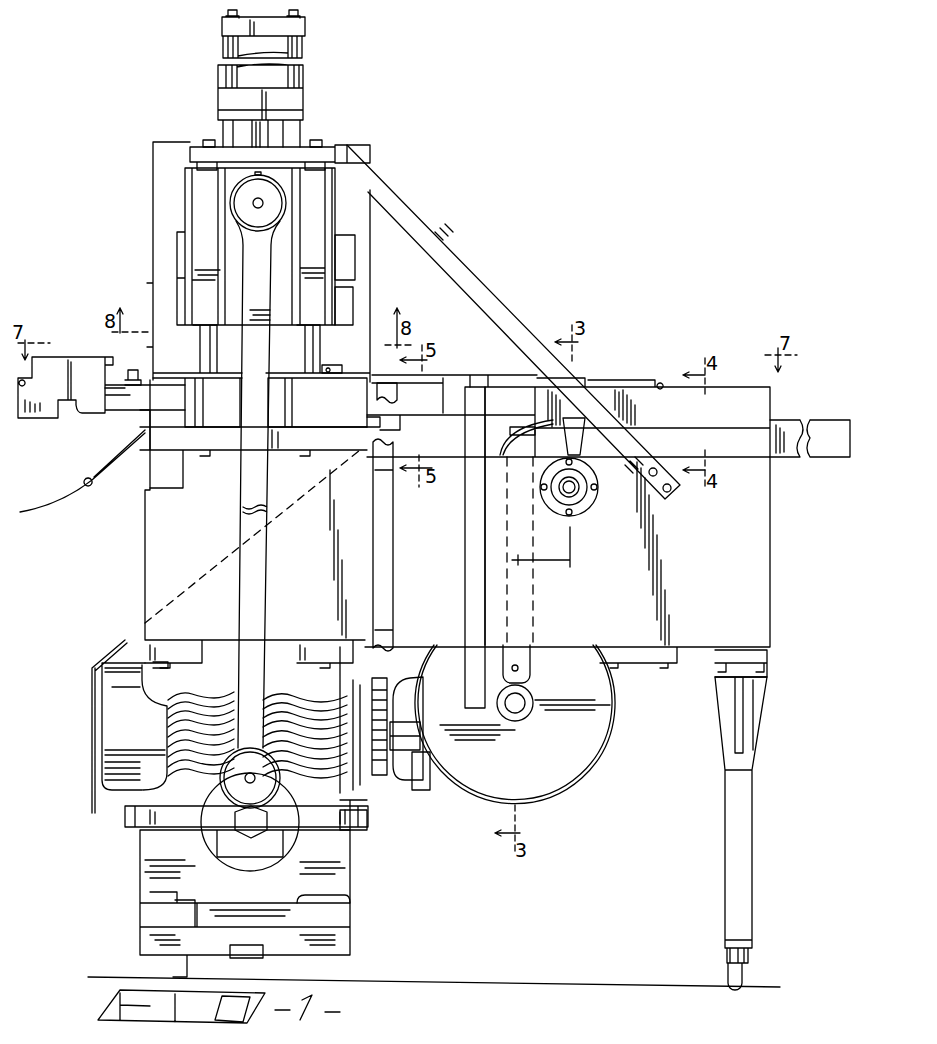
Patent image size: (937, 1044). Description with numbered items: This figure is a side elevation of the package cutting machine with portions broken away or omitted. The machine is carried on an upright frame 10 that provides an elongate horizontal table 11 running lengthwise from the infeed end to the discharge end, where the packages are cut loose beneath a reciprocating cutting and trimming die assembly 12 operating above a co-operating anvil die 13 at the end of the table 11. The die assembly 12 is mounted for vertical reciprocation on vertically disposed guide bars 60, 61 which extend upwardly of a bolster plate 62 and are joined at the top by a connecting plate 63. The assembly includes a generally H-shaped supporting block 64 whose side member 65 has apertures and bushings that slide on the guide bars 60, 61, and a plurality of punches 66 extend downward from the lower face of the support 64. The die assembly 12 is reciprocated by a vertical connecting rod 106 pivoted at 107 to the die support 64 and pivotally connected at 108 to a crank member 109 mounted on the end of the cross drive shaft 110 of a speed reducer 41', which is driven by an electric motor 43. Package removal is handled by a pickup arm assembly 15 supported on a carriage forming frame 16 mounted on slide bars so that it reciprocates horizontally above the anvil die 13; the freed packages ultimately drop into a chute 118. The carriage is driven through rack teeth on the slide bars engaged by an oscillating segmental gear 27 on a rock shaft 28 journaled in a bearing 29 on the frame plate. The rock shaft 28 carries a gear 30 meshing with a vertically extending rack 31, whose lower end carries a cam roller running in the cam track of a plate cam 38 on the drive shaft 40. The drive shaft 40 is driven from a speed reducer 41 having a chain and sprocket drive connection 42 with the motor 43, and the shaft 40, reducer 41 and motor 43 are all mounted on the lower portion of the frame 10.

The upright frame 10 is at (136, 576).
The table 11 is at (796, 419).
The cutting and trimming die assembly 12 is at (379, 266).
The anvil die 13 is at (337, 367).
The pickup arm assembly 15 is at (133, 362).
The carriage forming frame 16 is at (101, 402).
The segmental gear 27 is at (530, 457).
The rock shaft 28 is at (576, 493).
The bearing 29 is at (586, 482).
The gear 30 is at (583, 523).
The rack 31 is at (526, 654).
The plate cam 38 is at (483, 778).
The drive shaft 40 is at (403, 766).
The speed reducer 41 is at (422, 787).
The speed reducer 41' is at (345, 880).
The chain and sprocket drive connection 42 is at (378, 780).
The motor 43 is at (416, 678).
The guide bar 60 is at (306, 397).
The guide bar 61 is at (204, 412).
The bolster plate 62 is at (283, 452).
The connecting plate 63 is at (303, 153).
The supporting block 64 is at (348, 250).
The side member 65 is at (198, 209).
The punch 66 is at (353, 306).
The connecting rod 106 is at (263, 547).
The pivot 107 is at (262, 207).
The pivotal connection 108 is at (257, 781).
The crank member 109 is at (228, 808).
The cross drive shaft 110 is at (259, 832).
The chute 118 is at (90, 483).